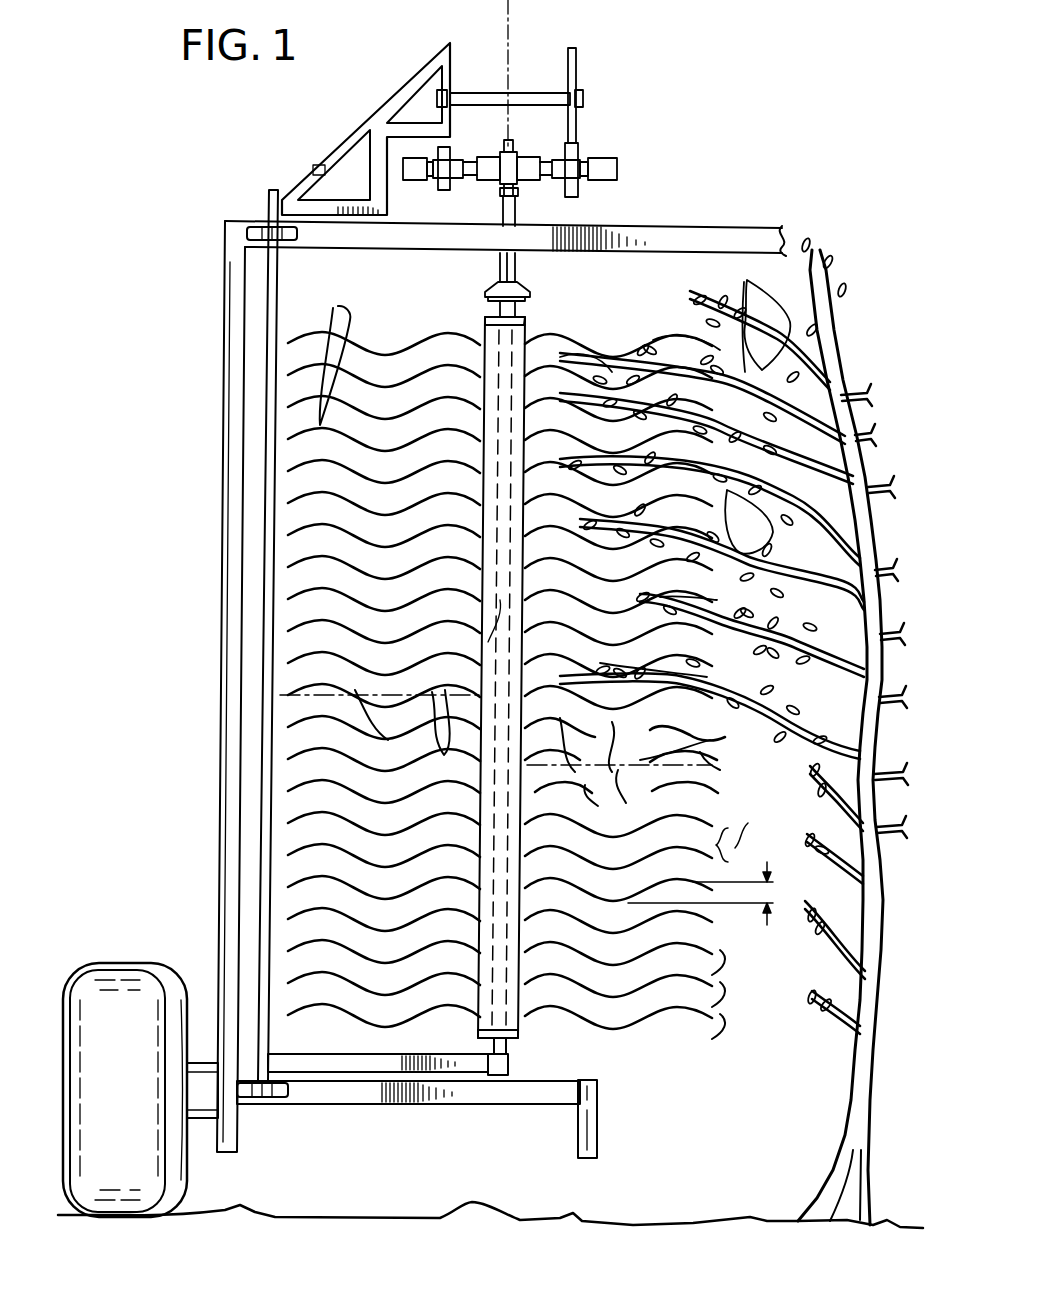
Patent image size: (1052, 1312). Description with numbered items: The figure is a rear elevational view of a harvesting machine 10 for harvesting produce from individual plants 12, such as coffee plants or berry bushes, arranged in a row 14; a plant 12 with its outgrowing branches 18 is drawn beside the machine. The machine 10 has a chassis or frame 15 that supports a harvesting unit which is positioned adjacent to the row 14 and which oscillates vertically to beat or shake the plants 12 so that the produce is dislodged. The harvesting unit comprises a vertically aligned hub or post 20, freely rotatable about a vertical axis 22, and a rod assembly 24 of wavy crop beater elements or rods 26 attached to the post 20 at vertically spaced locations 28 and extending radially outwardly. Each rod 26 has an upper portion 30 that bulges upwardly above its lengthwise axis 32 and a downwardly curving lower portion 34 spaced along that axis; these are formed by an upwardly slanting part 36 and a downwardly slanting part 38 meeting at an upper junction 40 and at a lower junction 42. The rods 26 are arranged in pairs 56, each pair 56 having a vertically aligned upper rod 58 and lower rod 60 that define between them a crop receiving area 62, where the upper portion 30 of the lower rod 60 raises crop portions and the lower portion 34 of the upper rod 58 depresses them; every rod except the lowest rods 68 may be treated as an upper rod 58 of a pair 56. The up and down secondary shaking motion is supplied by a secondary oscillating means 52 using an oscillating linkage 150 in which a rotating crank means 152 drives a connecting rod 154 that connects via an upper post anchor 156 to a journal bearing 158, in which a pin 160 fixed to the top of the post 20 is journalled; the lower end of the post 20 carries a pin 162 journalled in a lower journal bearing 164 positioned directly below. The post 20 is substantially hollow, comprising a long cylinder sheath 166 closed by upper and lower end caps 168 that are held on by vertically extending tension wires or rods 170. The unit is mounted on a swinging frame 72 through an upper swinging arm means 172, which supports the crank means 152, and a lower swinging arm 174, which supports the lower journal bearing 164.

The harvesting machine 10 is at (216, 184).
The plant 12 is at (834, 345).
The row 14 is at (820, 232).
The chassis or frame 15 is at (228, 416).
The outgrowing branches 18 is at (745, 305).
The hub or post 20 is at (485, 517).
The vertical axis 22 is at (520, 42).
The rod assembly 24 is at (390, 328).
The crop beater elements or rods 26 is at (338, 307).
The vertically spaced locations 28 is at (486, 628).
The upper portion 30 is at (443, 750).
The lengthwise axis 32 is at (298, 698).
The lower portion 34 is at (382, 694).
The upwardly slanting part 36 is at (536, 732).
The downwardly slanting part 38 is at (614, 736).
The upper junction 40 is at (570, 740).
The lower junction 42 is at (612, 780).
The secondary oscillating means 52 is at (585, 132).
The pair of rods 56 is at (300, 495).
The upper rod 58 is at (293, 458).
The lower rod 60 is at (300, 498).
The crop receiving area 62 is at (632, 582).
The lowest rods 68 is at (296, 1010).
The swinging frame 72 is at (322, 163).
The oscillating linkage 150 is at (496, 136).
The rotating crank means 152 is at (528, 152).
The connecting rod 154 is at (512, 212).
The upper post anchor 156 is at (530, 289).
The journal bearing 158 is at (527, 301).
The pin 160 is at (517, 310).
The pin 162 is at (508, 1045).
The lower journal bearing 164 is at (505, 1082).
The cylinder sheath 166 is at (492, 550).
The end caps 168 is at (487, 315).
The tension wires or rods 170 is at (494, 582).
The upper swinging arm means 172 is at (350, 132).
The lower swinging arm 174 is at (352, 1065).